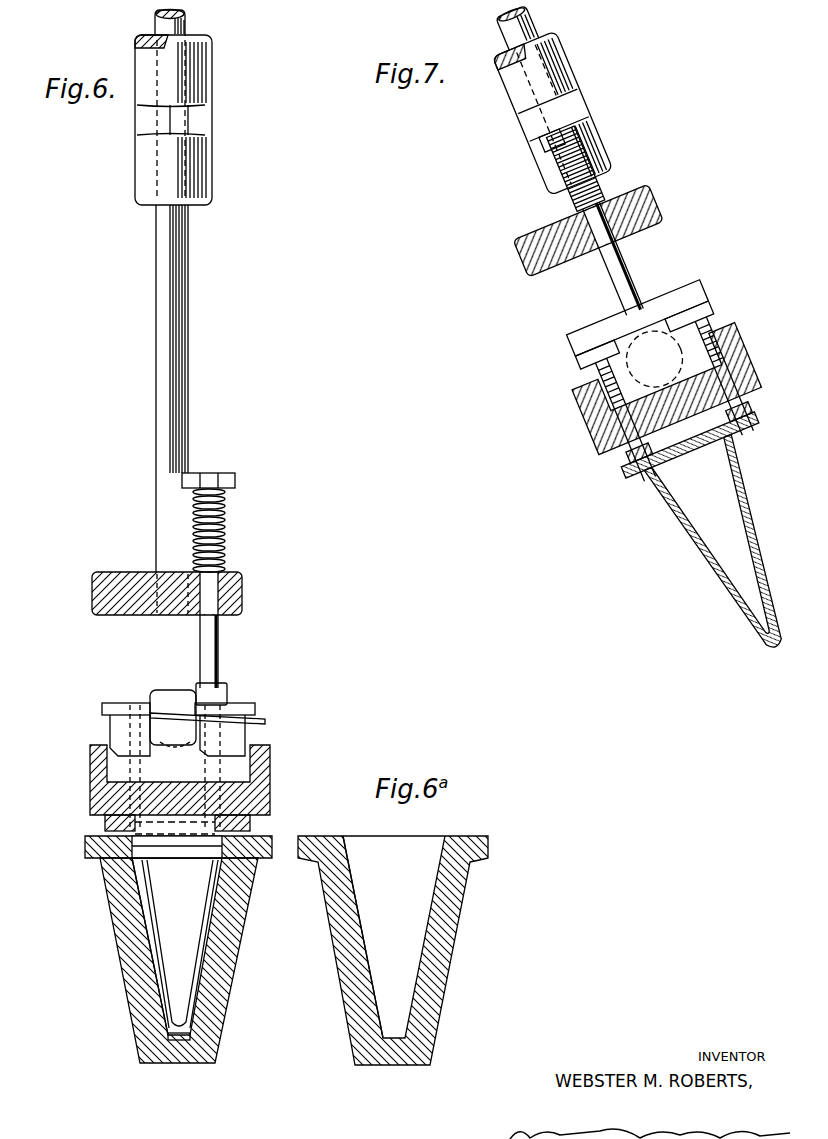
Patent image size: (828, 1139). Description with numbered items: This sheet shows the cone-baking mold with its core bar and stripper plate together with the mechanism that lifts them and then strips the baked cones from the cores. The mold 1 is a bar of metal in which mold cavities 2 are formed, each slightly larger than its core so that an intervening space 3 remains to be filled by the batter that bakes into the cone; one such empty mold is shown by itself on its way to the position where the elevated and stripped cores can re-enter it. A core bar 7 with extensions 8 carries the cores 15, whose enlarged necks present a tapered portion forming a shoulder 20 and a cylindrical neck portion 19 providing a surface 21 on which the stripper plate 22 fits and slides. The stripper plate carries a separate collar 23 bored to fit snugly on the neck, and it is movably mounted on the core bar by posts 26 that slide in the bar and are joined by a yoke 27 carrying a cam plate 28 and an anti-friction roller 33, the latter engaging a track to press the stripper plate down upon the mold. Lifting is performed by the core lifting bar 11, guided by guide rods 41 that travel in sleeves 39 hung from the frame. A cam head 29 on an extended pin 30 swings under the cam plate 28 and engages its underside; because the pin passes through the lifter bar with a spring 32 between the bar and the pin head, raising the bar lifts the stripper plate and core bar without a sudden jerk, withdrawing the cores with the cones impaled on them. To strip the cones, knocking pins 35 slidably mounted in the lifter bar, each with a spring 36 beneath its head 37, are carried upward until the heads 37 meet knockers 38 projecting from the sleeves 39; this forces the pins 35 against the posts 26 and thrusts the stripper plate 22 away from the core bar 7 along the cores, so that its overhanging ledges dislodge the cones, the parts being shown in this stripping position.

In FIG. 6, the mold 1 is at (112, 962).
In FIG. 6A, the mold 1 is at (340, 997).
In FIG. 6, the mold cavities 2 is at (135, 977).
In FIG. 6A, the mold cavities 2 is at (372, 1010).
In FIG. 6, the intervening space 3 is at (200, 1003).
In FIG. 6, the core bar 7 is at (90, 757).
In FIG. 7, the core bar 7 is at (578, 418).
In FIG. 6, the extensions 8 is at (165, 852).
In FIG. 6, the core lifting bar 11 is at (92, 593).
In FIG. 7, the core lifting bar 11 is at (520, 258).
In FIG. 6, the cores 15 is at (160, 906).
In FIG. 7, the cores 15 is at (705, 527).
In FIG. 6, the neck portion 19 is at (190, 852).
In FIG. 6, the shoulder 20 is at (112, 876).
In FIG. 6, the surface 21 is at (228, 822).
In FIG. 6, the stripper plate 22 is at (105, 822).
In FIG. 7, the stripper plate 22 is at (623, 472).
In FIG. 6, the collar 23 is at (105, 830).
In FIG. 7, the collar 23 is at (637, 483).
In FIG. 6, the posts 26 is at (112, 731).
In FIG. 7, the posts 26 is at (703, 328).
In FIG. 6, the yoke 27 is at (250, 724).
In FIG. 7, the yoke 27 is at (690, 318).
In FIG. 6, the cam plate 28 is at (190, 700).
In FIG. 6, the cam head 29 is at (255, 717).
In FIG. 6, the extended pin 30 is at (220, 646).
In FIG. 6, the spring 32 is at (226, 541).
In FIG. 6, the anti-friction roller 33 is at (150, 695).
In FIG. 7, the anti-friction roller 33 is at (607, 333).
In FIG. 7, the stripper plate knocking pins 35 is at (603, 275).
In FIG. 7, the spring 36 is at (560, 172).
In FIG. 7, the head 37 is at (533, 143).
In FIG. 6, the knockers 38 is at (160, 122).
In FIG. 7, the knockers 38 is at (518, 117).
In FIG. 6, the sleeves 39 is at (140, 168).
In FIG. 7, the sleeves 39 is at (517, 93).
In FIG. 6, the guide rods 41 is at (182, 283).